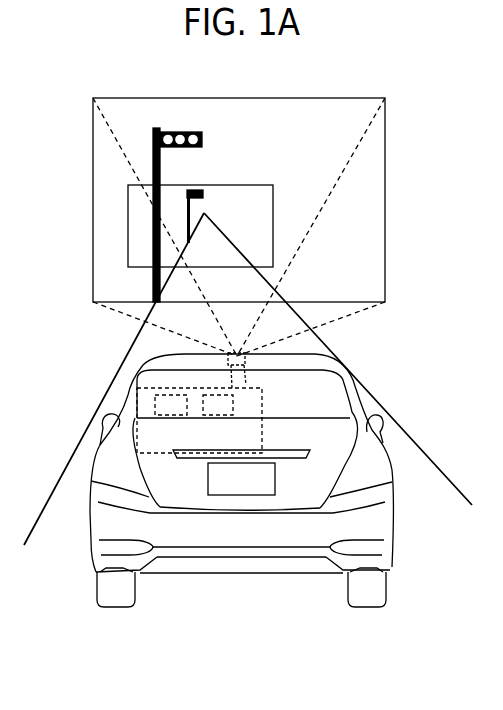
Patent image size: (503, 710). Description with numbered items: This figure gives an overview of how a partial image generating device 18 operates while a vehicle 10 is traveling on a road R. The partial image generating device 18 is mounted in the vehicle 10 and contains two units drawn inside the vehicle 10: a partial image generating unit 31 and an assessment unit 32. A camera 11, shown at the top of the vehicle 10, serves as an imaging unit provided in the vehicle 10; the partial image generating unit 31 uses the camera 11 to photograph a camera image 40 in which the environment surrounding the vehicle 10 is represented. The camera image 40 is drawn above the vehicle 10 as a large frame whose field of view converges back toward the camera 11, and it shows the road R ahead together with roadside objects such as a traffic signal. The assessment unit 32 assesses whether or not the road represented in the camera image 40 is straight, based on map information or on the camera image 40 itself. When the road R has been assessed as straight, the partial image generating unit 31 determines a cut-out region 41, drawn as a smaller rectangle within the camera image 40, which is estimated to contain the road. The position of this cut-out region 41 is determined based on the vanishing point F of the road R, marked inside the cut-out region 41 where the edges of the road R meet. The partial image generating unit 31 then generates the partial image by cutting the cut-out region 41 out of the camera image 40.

The vehicle 10 is at (385, 528).
The camera 11 is at (245, 385).
The partial image generating device 18 is at (246, 402).
The partial image generating unit 31 is at (175, 418).
The assessment unit 32 is at (208, 420).
The camera image 40 is at (311, 98).
The cut-out region 41 is at (217, 192).
The vanishing point F is at (210, 216).
The road R is at (88, 428).